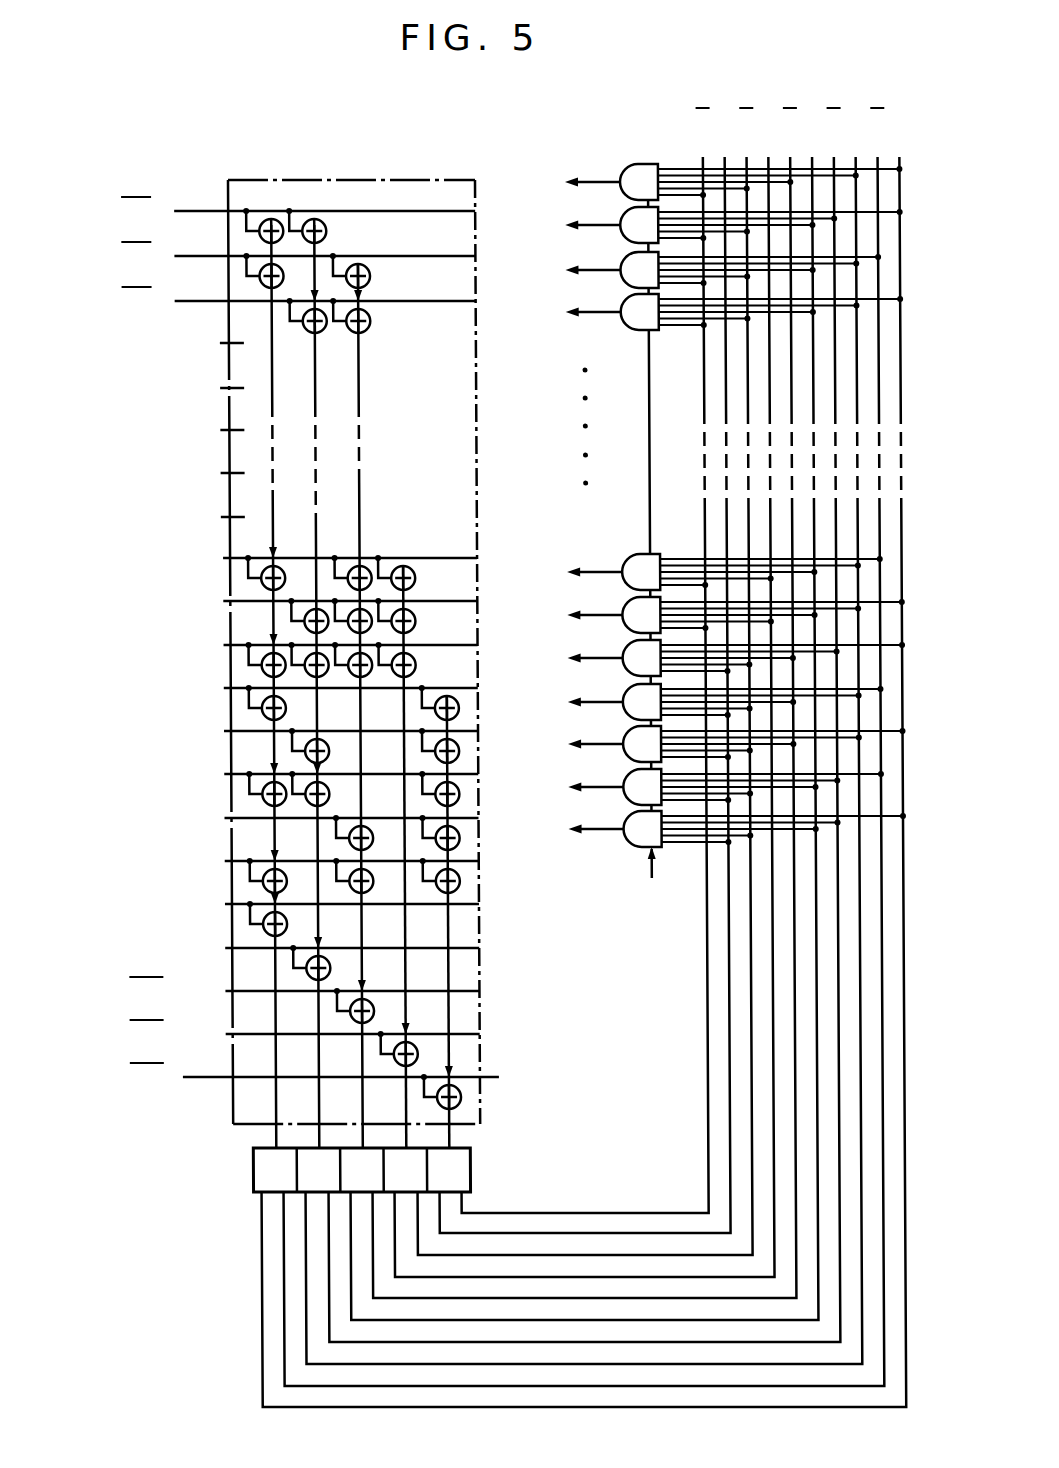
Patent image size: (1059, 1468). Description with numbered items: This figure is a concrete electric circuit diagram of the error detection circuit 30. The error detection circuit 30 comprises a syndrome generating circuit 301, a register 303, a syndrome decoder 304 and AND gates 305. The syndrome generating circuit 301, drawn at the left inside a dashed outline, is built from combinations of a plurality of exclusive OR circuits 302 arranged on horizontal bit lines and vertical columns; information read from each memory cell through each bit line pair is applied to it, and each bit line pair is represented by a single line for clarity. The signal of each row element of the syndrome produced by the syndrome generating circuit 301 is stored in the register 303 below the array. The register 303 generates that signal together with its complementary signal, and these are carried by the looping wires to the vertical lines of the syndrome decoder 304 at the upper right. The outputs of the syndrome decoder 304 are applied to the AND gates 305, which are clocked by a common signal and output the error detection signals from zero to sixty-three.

The error detection circuit 30 is at (322, 116).
The syndrome generating circuit 301 is at (360, 180).
The exclusive OR circuit 302 is at (275, 225).
The register 303 is at (250, 1176).
The syndrome decoder 304 is at (672, 97).
The AND gates 305 is at (633, 160).